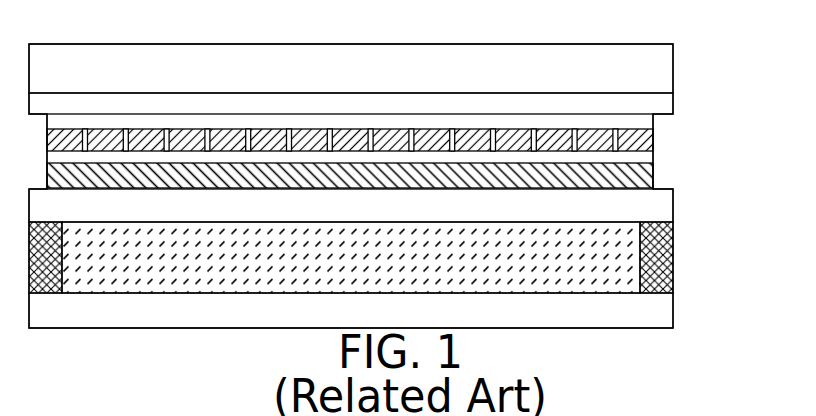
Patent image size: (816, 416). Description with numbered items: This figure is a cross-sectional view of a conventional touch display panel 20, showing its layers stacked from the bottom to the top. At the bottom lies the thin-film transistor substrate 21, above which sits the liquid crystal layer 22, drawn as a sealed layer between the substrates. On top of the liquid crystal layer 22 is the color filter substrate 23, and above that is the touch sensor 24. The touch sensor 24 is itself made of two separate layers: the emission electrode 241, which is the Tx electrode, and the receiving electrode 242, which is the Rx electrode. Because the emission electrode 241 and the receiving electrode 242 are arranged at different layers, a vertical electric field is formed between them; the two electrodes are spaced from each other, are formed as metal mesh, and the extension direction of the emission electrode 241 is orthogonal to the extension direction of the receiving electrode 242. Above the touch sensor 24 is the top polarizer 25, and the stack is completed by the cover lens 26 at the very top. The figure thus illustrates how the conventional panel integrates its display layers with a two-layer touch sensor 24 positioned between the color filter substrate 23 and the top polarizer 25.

The touch display panel 20 is at (376, 33).
The thin-film transistor substrate 21 is at (655, 312).
The liquid crystal layer 22 is at (640, 258).
The color filter substrate 23 is at (655, 207).
The touch sensor 24 is at (742, 125).
The emission electrode 241 is at (640, 170).
The receiving electrode 242 is at (657, 136).
The top polarizer 25 is at (660, 103).
The cover lens 26 is at (660, 63).